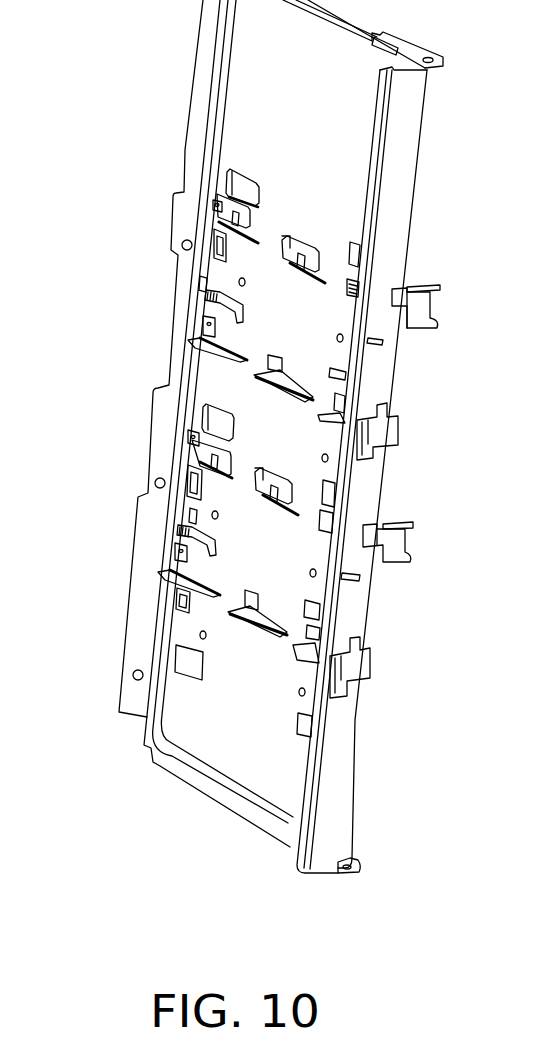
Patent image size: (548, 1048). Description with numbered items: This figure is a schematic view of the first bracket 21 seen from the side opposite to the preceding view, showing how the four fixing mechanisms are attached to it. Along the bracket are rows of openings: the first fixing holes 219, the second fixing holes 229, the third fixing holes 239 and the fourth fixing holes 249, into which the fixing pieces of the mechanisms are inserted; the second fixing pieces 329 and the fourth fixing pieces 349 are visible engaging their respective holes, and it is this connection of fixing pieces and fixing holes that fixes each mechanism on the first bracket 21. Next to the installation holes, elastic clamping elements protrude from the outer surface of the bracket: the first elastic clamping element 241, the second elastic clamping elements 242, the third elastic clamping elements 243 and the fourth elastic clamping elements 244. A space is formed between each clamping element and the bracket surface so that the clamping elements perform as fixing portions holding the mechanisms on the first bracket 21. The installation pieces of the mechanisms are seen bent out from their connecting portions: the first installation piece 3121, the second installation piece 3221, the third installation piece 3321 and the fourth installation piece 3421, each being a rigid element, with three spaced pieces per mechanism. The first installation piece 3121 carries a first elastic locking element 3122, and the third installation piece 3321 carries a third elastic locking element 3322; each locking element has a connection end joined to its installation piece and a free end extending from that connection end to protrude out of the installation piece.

The first bracket 21 is at (235, 78).
The first fixing holes 219 is at (230, 175).
The first elastic clamping element 241 is at (213, 203).
The first installation piece 3121 is at (218, 212).
The first elastic locking element 3122 is at (214, 240).
The second fixing holes 229 is at (205, 282).
The second fixing pieces 329 is at (210, 300).
The second elastic clamping elements 242 is at (204, 320).
The second installation piece 3221 is at (200, 344).
The third fixing holes 239 is at (184, 436).
The third elastic clamping elements 243 is at (197, 446).
The third installation piece 3321 is at (187, 441).
The third elastic locking element 3322 is at (200, 462).
The fourth fixing holes 249 is at (197, 525).
The fourth fixing pieces 349 is at (195, 527).
The fourth elastic clamping elements 244 is at (190, 550).
The fourth installation piece 3421 is at (172, 567).